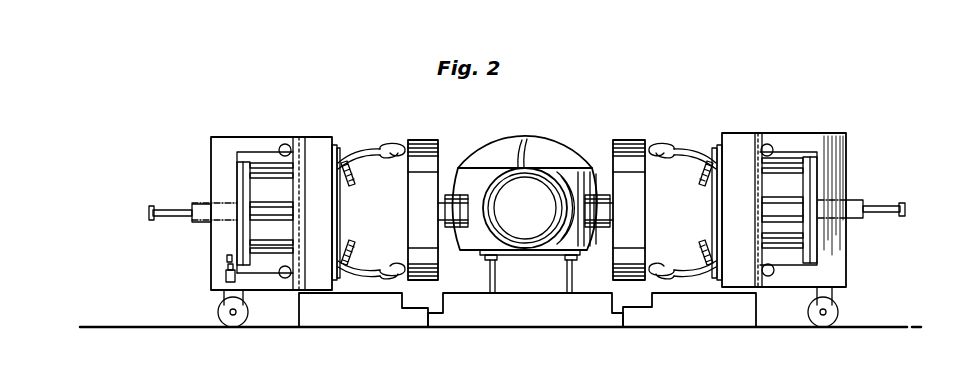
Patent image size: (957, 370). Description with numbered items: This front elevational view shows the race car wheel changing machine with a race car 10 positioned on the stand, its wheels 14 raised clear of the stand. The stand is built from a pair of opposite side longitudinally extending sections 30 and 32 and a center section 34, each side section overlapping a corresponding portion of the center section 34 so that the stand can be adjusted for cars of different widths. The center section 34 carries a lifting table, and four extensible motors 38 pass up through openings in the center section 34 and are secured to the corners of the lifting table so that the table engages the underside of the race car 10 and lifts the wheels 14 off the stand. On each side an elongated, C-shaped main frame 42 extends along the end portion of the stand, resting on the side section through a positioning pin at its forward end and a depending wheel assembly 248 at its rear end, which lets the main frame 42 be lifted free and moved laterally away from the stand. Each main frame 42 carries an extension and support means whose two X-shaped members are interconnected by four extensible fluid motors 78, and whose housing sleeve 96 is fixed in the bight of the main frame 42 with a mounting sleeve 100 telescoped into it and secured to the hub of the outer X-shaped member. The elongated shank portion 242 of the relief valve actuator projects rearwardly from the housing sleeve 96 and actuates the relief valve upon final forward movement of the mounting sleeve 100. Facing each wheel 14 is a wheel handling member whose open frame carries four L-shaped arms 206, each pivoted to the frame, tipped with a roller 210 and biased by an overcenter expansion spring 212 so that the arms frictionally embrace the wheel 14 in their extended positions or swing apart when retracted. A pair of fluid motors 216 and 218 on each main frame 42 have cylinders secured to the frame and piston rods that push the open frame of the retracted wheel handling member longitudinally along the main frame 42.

The race car 10 is at (543, 140).
The wheels 14 is at (430, 165).
The side section 30 is at (716, 302).
The side section 32 is at (355, 310).
The center section 34 is at (515, 312).
The extensible motors 38 is at (563, 272).
The main frame 42 is at (226, 134).
The extensible fluid motors 78 is at (277, 180).
The housing sleeve 96 is at (200, 203).
The mounting sleeve 100 is at (275, 212).
The L-shaped arms 206 is at (370, 150).
The roller 210 is at (398, 143).
The expansion spring 212 is at (356, 167).
The fluid motor 216 is at (286, 143).
The fluid motor 218 is at (284, 279).
The shank portion 242 is at (164, 214).
The wheel assembly 248 is at (221, 294).